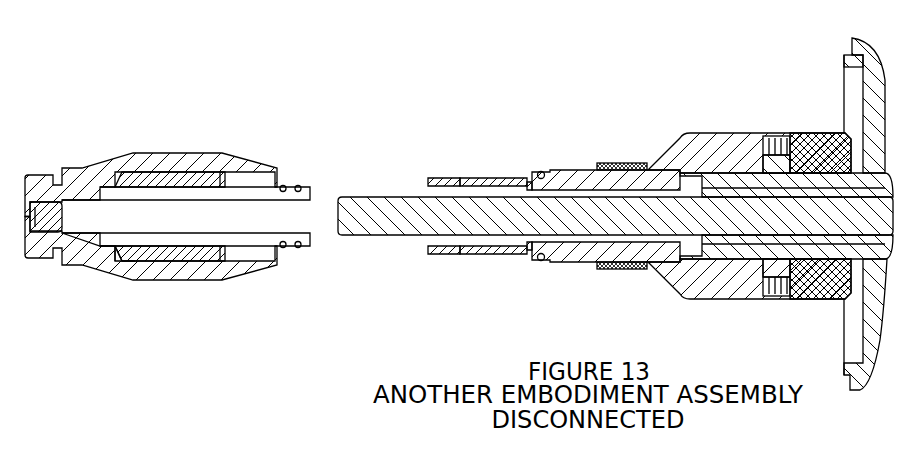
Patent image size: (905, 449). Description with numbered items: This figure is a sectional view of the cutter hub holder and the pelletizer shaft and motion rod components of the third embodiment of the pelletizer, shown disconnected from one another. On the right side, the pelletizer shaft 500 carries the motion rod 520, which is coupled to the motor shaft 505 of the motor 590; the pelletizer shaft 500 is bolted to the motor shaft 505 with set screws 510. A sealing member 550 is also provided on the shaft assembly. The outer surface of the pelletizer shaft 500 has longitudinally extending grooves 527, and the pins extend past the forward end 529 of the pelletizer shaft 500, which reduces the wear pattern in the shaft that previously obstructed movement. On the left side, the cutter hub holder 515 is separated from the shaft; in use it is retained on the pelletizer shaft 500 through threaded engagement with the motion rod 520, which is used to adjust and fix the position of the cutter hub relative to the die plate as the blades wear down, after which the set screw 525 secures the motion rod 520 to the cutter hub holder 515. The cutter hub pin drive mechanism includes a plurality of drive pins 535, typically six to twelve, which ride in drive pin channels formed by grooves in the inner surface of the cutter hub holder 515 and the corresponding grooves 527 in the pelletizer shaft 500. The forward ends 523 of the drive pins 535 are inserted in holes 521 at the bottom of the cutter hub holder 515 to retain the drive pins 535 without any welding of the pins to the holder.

The pelletizer shaft 500 is at (590, 168).
The motor shaft 505 is at (821, 168).
The set screws 510 is at (776, 134).
The cutter hub holder 515 is at (147, 151).
The motion rod 520 is at (523, 189).
The holes 521 is at (115, 262).
The forward ends 523 is at (124, 264).
The set screw 525 is at (40, 193).
The longitudinally extending grooves 527 is at (473, 177).
The forward end 529 is at (428, 177).
The drive pins 535 is at (177, 170).
The sealing member 550 is at (545, 169).
The motor 590 is at (840, 53).